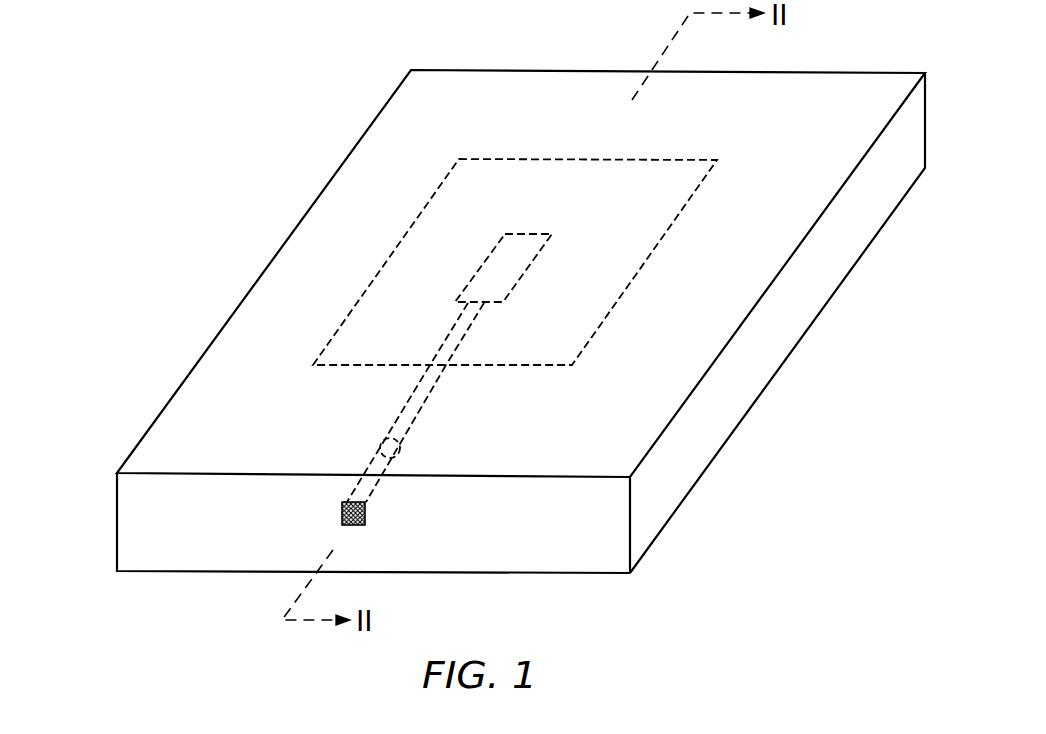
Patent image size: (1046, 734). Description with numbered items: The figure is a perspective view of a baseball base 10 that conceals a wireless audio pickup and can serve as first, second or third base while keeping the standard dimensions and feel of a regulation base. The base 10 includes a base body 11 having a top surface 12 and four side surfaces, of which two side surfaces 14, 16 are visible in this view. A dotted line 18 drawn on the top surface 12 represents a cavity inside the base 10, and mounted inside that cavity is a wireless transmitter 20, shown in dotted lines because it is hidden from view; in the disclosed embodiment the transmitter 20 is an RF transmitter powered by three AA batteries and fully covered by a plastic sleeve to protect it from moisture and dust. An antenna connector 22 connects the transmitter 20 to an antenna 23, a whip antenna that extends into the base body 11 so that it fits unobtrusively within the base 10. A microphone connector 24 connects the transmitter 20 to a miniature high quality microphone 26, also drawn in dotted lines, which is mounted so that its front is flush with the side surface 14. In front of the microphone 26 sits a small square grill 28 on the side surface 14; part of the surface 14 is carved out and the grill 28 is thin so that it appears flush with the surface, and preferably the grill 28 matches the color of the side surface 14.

The baseball base 10 is at (488, 347).
The base body 11 is at (630, 573).
The top surface 12 is at (252, 436).
The side surface 14 is at (229, 536).
The side surface 16 is at (743, 382).
The dotted line 18 is at (662, 159).
The wireless transmitter 20 is at (527, 234).
The antenna connector 22 is at (436, 352).
The antenna 23 is at (404, 398).
The microphone connector 24 is at (482, 318).
The microphone 26 is at (400, 447).
The grill 28 is at (365, 517).